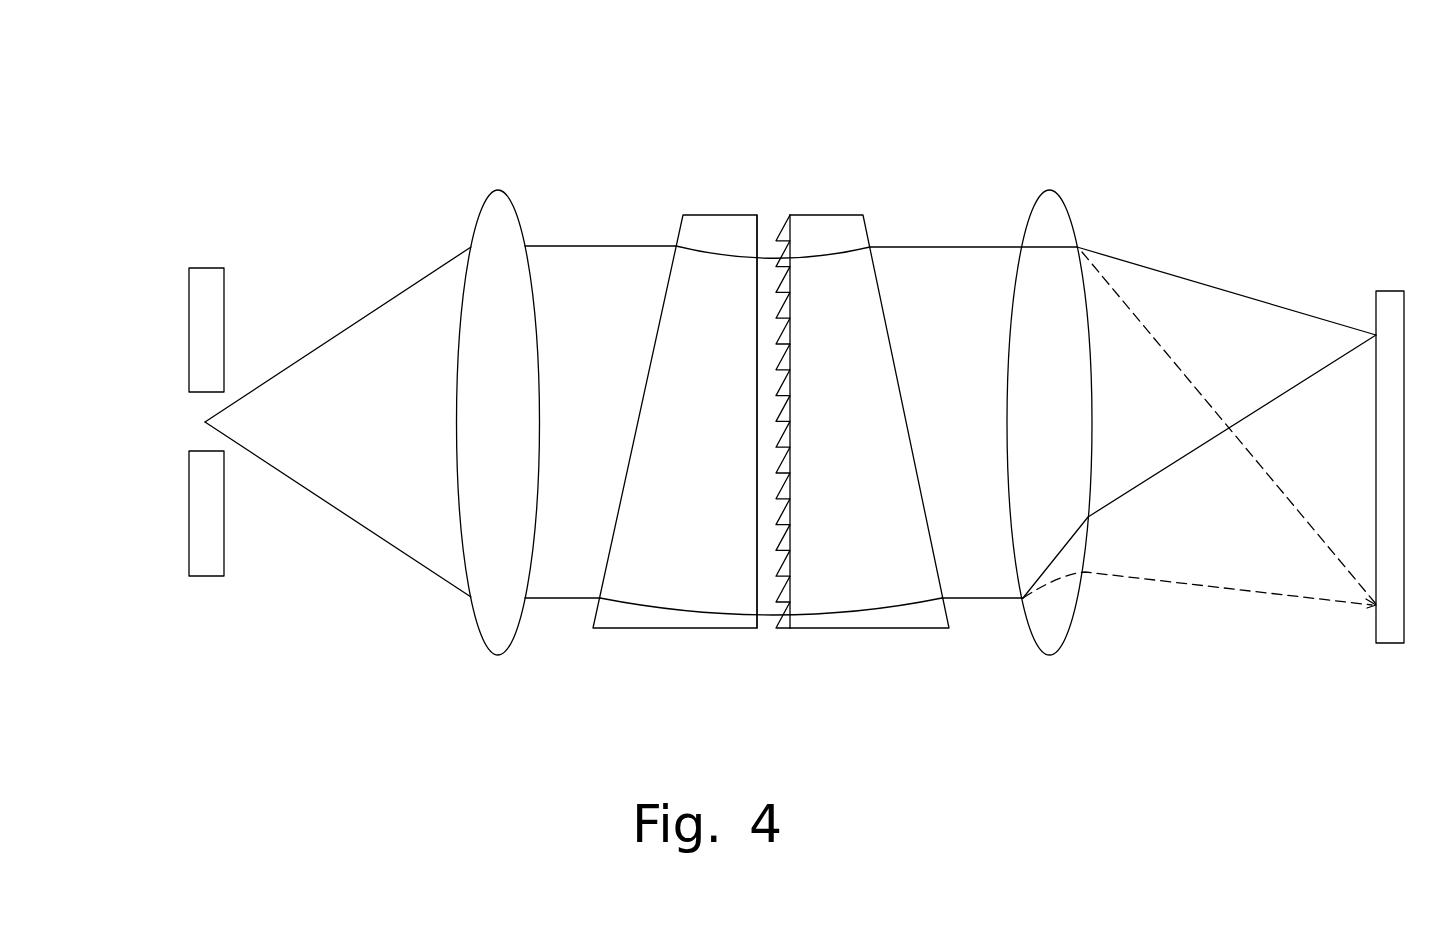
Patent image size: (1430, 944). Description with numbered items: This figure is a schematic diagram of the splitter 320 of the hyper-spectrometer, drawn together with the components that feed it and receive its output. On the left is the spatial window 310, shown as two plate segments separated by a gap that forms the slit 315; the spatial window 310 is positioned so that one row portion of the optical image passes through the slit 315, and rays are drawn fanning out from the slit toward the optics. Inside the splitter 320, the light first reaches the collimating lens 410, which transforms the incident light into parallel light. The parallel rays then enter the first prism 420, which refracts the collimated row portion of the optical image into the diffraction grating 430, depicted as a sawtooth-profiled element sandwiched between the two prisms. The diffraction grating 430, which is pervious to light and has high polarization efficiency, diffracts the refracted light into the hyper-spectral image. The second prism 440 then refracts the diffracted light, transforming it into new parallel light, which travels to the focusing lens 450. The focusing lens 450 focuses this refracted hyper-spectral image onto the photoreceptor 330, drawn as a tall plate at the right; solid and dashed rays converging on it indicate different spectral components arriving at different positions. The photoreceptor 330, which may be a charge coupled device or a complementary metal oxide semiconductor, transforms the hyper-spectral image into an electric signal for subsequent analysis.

The spatial window 310 is at (207, 266).
The slit 315 is at (190, 420).
The splitter 320 is at (318, 63).
The photoreceptor 330 is at (1392, 290).
The collimating lens 410 is at (523, 427).
The first prism 420 is at (720, 427).
The diffraction grating 430 is at (775, 213).
The second prism 440 is at (872, 427).
The focusing lens 450 is at (1077, 427).